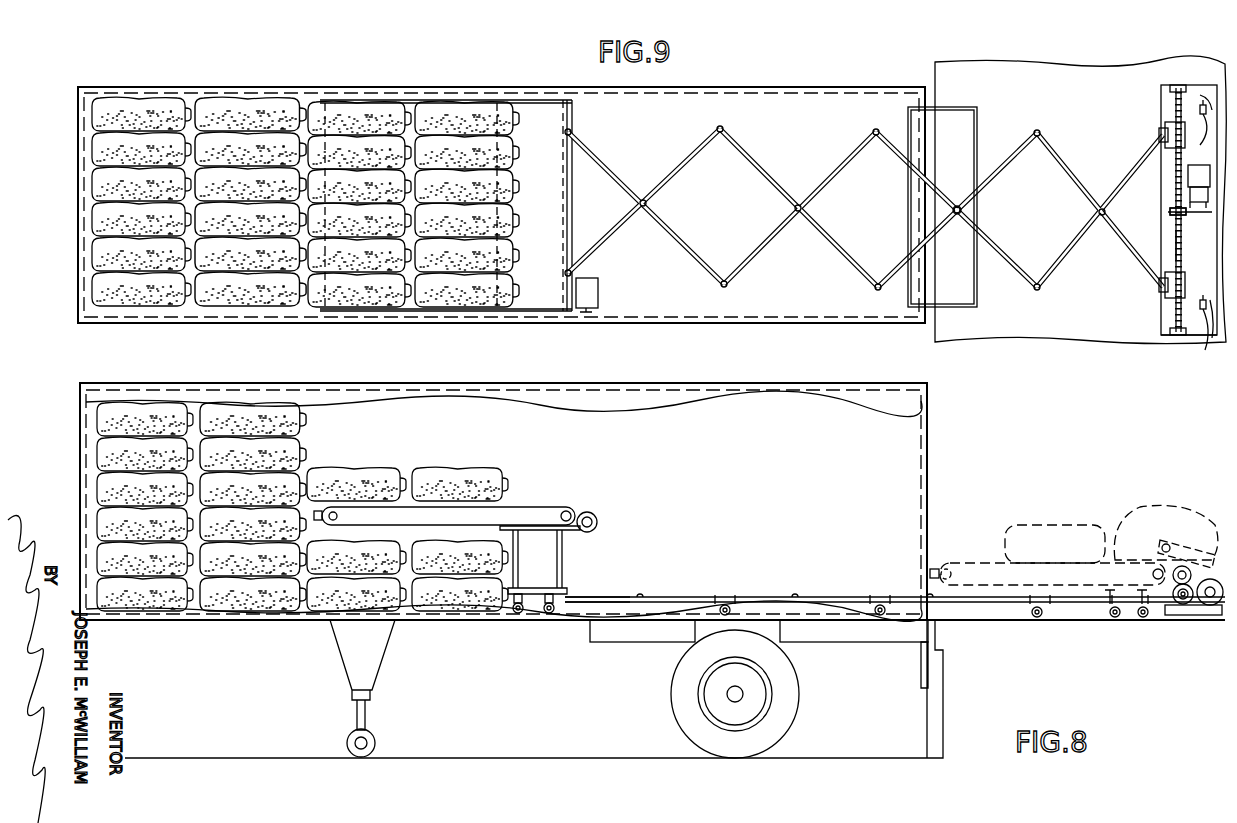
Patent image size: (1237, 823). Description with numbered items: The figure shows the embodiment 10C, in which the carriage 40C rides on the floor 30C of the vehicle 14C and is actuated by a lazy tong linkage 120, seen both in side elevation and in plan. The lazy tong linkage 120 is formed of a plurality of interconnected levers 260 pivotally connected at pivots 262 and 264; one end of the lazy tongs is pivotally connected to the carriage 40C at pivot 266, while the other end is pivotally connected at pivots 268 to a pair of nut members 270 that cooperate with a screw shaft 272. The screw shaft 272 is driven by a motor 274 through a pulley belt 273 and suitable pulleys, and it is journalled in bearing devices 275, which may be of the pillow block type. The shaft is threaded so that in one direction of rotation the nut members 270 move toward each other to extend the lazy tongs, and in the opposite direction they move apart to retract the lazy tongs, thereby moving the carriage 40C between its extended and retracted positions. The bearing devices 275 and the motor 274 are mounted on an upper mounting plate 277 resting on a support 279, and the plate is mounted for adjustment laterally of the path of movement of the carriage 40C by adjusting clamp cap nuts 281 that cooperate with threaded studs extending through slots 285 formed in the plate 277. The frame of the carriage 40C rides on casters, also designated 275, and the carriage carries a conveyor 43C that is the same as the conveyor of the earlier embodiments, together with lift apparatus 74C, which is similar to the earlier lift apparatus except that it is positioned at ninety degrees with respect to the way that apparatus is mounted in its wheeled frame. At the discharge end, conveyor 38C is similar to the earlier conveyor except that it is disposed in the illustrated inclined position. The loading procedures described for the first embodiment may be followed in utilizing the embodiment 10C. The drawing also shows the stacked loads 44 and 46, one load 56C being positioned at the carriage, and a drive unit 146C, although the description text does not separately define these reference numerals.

In FIG. 8, the embodiment 10C is at (78, 382).
In FIG. 8, the vehicle 14C is at (703, 383).
In FIG. 8, the floor 30C is at (522, 626).
In FIG. 8, the conveyor 38C is at (1213, 540).
In FIG. 8, the carriage 40C is at (603, 522).
In FIG. 8, the conveyor 43C is at (546, 485).
In FIG. 9, the bales 44 is at (277, 185).
In FIG. 8, the bales 46 is at (115, 420).
In FIG. 8, the bale 56C is at (407, 557).
In FIG. 8, the lift apparatus 74C is at (574, 561).
In FIG. 9, the lazy tong linkage 120 is at (831, 122).
In FIG. 8, the lazy tong linkage 120 is at (766, 594).
In FIG. 9, the drive unit 146C is at (601, 292).
In FIG. 9, the levers 260 is at (757, 161).
In FIG. 9, the pivotal connection 262 is at (962, 211).
In FIG. 9, the pivotal connection 264 is at (723, 130).
In FIG. 9, the pivotal connection 266 is at (572, 132).
In FIG. 9, the pivotal connection 268 is at (1160, 135).
In FIG. 9, the nut members 270 is at (1165, 124).
In FIG. 9, the screw shaft 272 is at (1178, 244).
In FIG. 9, the pulley belt 273 is at (1178, 215).
In FIG. 9, the motor 274 is at (1188, 195).
In FIG. 9, the bearing devices 275 is at (1178, 85).
In FIG. 8, the bearing devices 275 is at (515, 613).
In FIG. 9, the upper mounting plate 277 is at (1195, 322).
In FIG. 8, the upper mounting plate 277 is at (1215, 614).
In FIG. 8, the support 279 is at (1181, 615).
In FIG. 9, the clamp cap nuts 281 is at (1210, 112).
In FIG. 9, the slots 285 is at (1203, 105).